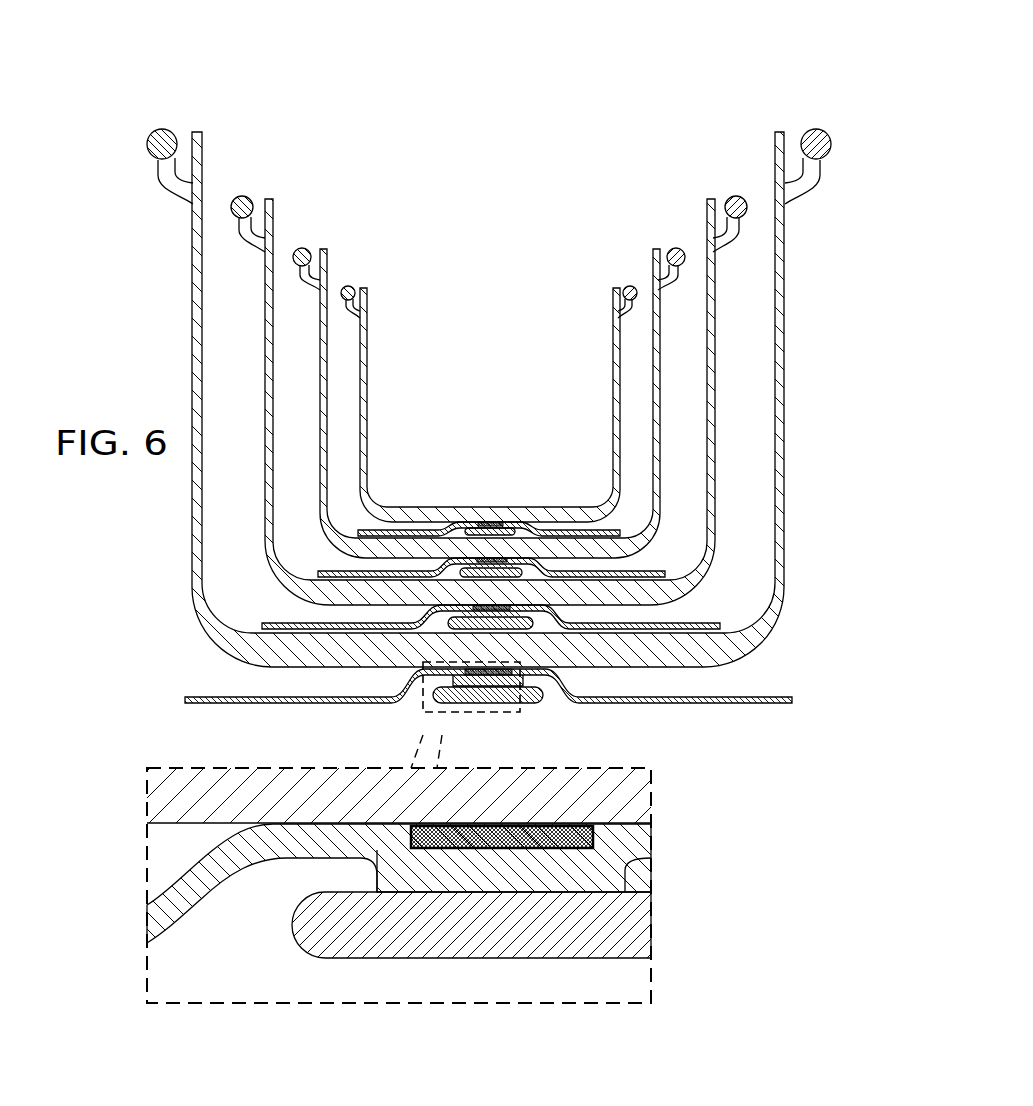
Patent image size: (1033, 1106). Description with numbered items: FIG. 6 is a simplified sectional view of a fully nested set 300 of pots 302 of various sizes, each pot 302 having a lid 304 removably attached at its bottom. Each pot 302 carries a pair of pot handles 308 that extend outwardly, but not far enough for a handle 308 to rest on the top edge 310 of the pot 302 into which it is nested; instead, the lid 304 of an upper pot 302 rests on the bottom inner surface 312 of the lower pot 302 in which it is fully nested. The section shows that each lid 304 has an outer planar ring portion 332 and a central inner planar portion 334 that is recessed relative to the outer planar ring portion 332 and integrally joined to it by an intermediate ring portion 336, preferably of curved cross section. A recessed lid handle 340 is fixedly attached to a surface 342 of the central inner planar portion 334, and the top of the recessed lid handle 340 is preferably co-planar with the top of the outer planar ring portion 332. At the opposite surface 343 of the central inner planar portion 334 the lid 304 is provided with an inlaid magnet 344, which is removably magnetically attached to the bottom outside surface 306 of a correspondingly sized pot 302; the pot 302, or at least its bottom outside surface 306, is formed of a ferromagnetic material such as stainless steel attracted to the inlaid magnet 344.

The fully nested set 300 is at (722, 101).
The pot 302 is at (361, 362).
The lid 304 is at (652, 575).
The bottom outside surface 306 is at (437, 556).
The pot handle 308 is at (163, 130).
The top edge 310 is at (271, 197).
The bottom inner surface 312 is at (548, 578).
The outer planar ring portion 332 is at (600, 629).
The central inner planar portion 334 is at (490, 612).
The intermediate ring portion 336 is at (560, 673).
The recessed lid handle 340 is at (637, 930).
The surface 342 is at (571, 880).
The surface 343 is at (430, 848).
The inlaid magnet 344 is at (594, 830).